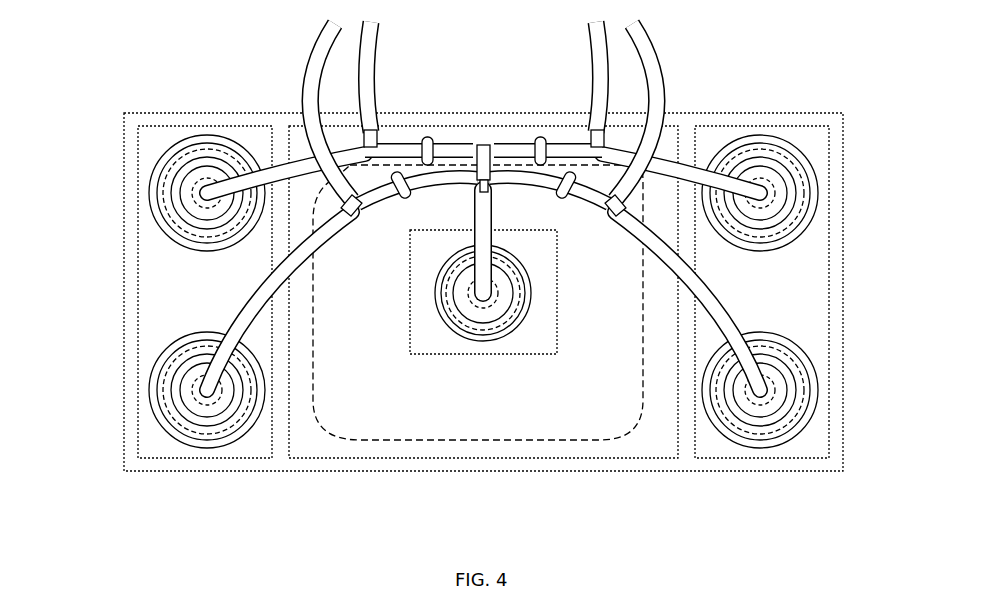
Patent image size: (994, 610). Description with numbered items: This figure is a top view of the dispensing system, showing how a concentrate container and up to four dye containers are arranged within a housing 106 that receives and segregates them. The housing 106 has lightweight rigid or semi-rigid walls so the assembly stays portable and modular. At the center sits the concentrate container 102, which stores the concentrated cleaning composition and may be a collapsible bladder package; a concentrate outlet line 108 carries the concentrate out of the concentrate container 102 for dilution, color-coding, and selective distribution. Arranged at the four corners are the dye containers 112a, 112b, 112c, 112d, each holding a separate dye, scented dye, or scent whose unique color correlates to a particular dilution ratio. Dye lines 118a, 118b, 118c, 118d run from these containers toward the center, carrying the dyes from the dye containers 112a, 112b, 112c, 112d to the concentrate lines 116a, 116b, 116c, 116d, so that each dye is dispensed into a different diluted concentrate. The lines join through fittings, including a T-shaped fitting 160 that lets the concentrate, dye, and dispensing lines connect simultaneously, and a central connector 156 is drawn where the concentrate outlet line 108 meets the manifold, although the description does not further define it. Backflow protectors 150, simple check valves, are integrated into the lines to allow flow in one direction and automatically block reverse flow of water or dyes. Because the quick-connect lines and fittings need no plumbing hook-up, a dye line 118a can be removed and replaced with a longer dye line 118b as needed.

The concentrate container 102 is at (575, 440).
The housing 106 is at (124, 150).
The concentrate outlet line 108 is at (473, 213).
The dye container 112a is at (183, 152).
The dye container 112b is at (175, 352).
The dye container 112c is at (793, 354).
The dye container 112d is at (780, 150).
The concentrate line 116a is at (310, 48).
The concentrate line 116b is at (373, 62).
The concentrate line 116c is at (590, 65).
The concentrate line 116d is at (667, 60).
The dye line 118a is at (272, 160).
The dye line 118b is at (262, 302).
The dye line 118c is at (710, 296).
The dye line 118d is at (690, 165).
The backflow protector 150 is at (537, 140).
The tee connector 156 is at (490, 187).
The T-shaped fitting 160 is at (378, 138).